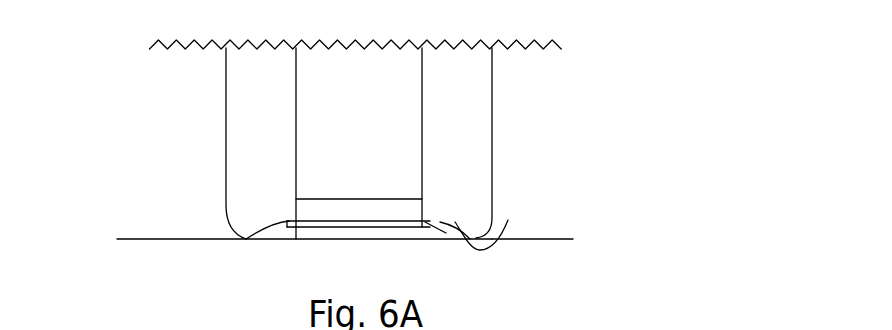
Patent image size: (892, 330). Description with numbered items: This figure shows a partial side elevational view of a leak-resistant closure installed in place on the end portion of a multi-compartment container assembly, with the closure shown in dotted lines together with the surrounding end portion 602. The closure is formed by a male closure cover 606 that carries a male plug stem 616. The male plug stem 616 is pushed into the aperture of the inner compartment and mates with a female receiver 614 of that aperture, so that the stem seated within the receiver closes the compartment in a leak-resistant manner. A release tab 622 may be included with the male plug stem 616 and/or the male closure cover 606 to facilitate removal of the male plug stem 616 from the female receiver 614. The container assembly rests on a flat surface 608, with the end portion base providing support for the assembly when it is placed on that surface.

The substrate / body 602 is at (492, 97).
The female receiver 614 is at (423, 203).
The male plug stem 616 is at (423, 217).
The release tab 622 is at (508, 220).
The flat surface 608 is at (532, 239).
The male closure cover 606 is at (397, 240).